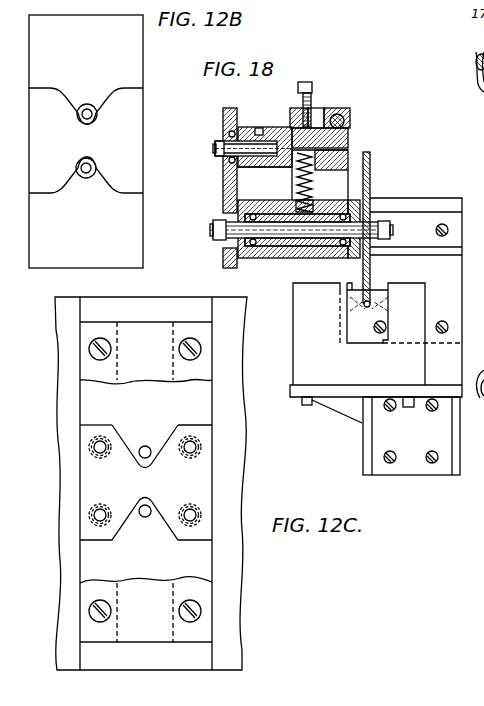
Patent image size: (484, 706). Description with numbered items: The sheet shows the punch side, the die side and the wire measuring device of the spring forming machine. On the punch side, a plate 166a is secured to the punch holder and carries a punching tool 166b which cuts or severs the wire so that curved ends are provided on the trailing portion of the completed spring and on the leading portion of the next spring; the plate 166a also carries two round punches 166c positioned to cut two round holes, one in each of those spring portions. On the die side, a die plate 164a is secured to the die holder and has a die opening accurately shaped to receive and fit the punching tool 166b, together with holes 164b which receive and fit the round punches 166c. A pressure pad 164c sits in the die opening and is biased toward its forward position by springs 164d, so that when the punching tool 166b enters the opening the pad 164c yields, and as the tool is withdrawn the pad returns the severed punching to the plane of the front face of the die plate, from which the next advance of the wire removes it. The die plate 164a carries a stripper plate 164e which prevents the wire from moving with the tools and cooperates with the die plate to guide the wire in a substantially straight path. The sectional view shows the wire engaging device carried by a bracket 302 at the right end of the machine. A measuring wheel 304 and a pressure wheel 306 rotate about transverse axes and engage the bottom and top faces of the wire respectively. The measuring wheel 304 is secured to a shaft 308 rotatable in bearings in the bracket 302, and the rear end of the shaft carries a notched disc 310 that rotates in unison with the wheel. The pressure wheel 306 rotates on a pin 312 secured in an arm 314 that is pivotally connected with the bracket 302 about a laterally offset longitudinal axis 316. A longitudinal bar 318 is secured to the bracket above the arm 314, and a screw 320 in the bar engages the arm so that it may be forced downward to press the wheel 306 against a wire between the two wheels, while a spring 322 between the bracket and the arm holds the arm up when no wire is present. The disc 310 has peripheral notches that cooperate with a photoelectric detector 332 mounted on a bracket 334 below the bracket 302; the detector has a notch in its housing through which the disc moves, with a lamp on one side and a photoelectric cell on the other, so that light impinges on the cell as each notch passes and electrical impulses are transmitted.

In FIG. 12B, the plate 166a is at (135, 50).
In FIG. 12B, the punching tool 166b is at (128, 164).
In FIG. 12B, the round punches 166c is at (90, 118).
In FIG. 18, the bracket 302 is at (285, 259).
In FIG. 18, the measuring wheel 304 is at (224, 264).
In FIG. 18, the pressure wheel 306 is at (224, 112).
In FIG. 18, the shaft 308 is at (282, 168).
In FIG. 18, the notched disc 310 is at (372, 161).
In FIG. 18, the pin 312 is at (251, 140).
In FIG. 18, the arm 314 is at (282, 127).
In FIG. 18, the longitudinal axis 316 is at (346, 121).
In FIG. 18, the longitudinal bar 318 is at (318, 113).
In FIG. 18, the screw 320 is at (307, 82).
In FIG. 18, the spring 322 is at (311, 176).
In FIG. 18, the photoelectric detector 332 is at (358, 373).
In FIG. 18, the bracket 334 is at (362, 438).
In FIG. 12C, the die plate 164a is at (96, 405).
In FIG. 12C, the holes 164b is at (149, 446).
In FIG. 12C, the pressure pad 164c is at (93, 468).
In FIG. 12C, the springs 164d is at (88, 513).
In FIG. 12C, the stripper plate 164e is at (95, 366).